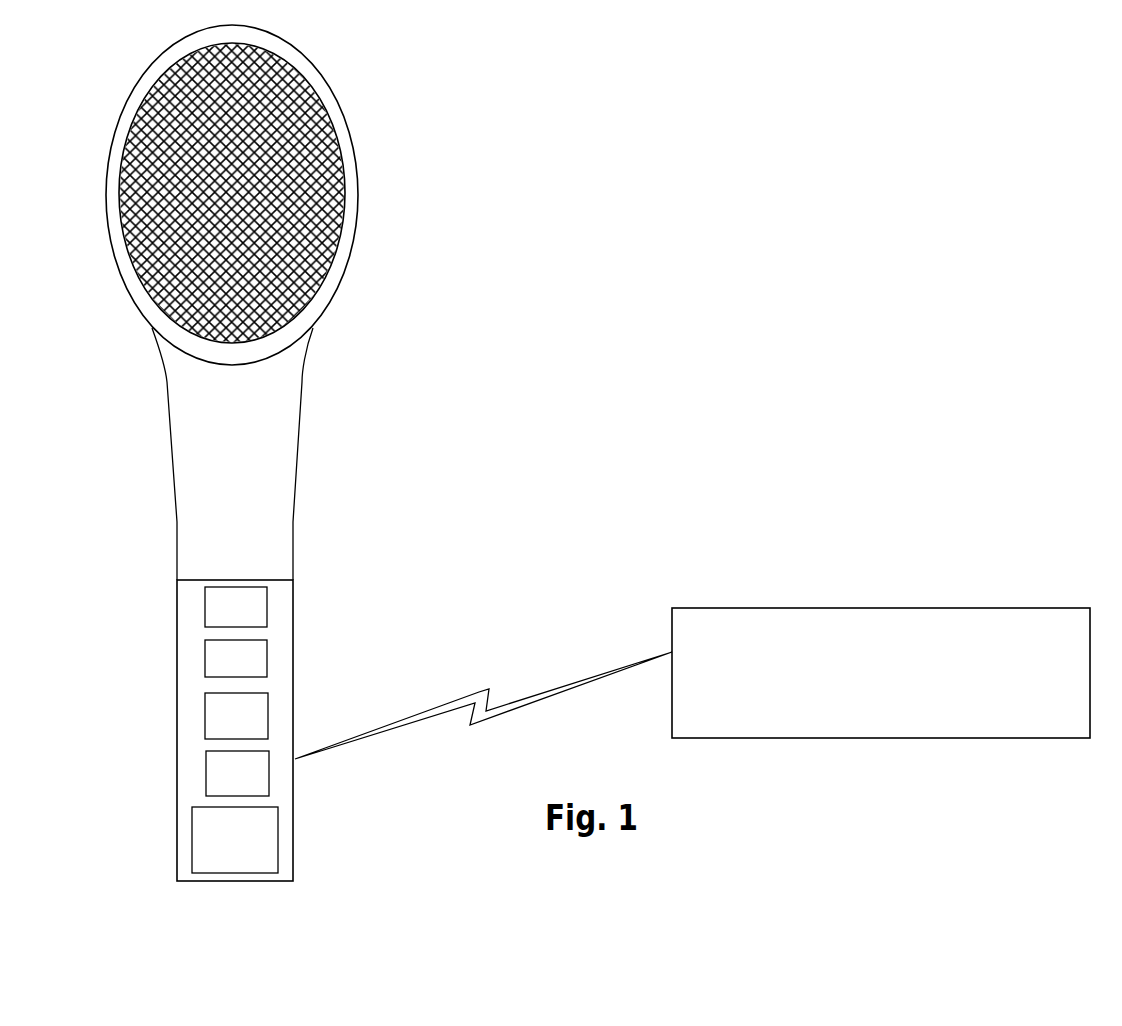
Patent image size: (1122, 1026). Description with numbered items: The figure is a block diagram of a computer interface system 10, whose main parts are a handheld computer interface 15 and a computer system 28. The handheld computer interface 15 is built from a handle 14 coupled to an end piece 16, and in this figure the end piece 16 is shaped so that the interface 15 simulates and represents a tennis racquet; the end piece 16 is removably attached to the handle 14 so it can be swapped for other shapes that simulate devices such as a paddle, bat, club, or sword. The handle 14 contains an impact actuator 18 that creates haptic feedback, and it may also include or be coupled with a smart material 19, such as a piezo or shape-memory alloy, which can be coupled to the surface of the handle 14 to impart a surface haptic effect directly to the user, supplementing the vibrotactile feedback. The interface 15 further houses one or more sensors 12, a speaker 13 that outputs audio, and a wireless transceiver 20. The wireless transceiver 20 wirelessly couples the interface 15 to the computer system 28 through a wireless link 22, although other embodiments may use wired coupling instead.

The computer interface system 10 is at (675, 213).
The sensors 12 is at (277, 600).
The speaker 13 is at (267, 656).
The handle 14 is at (183, 597).
The handheld computer interface 15 is at (370, 313).
The end piece 16 is at (283, 444).
The impact actuator 18 is at (267, 706).
The smart material 19 is at (206, 771).
The wireless transceiver 20 is at (273, 822).
The wireless link 22 is at (482, 690).
The computer system 28 is at (957, 702).